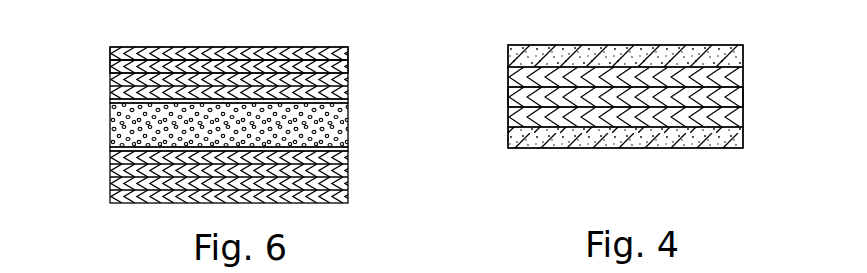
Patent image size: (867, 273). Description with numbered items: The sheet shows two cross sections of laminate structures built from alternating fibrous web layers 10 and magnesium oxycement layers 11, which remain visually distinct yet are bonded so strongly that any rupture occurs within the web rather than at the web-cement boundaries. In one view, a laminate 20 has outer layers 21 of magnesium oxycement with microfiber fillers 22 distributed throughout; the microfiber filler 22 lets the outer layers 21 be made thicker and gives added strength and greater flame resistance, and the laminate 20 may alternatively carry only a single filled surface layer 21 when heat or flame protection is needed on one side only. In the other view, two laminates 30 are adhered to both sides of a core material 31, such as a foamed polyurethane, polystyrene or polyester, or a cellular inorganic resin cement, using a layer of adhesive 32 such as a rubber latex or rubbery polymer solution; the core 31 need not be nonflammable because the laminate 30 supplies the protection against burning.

In FIG. 6, the fibrous web layer 10 is at (128, 52).
In FIG. 4, the fibrous web layer 10 is at (512, 77).
In FIG. 6, the magnesium oxycement layer 11 is at (110, 65).
In FIG. 4, the magnesium oxycement layer 11 is at (510, 88).
In FIG. 4, the laminate 20 is at (752, 45).
In FIG. 4, the outer layer 21 is at (508, 53).
In FIG. 4, the microfiber filler 22 is at (543, 54).
In FIG. 6, the laminate 30 is at (360, 43).
In FIG. 6, the core material 31 is at (112, 121).
In FIG. 6, the adhesive 32 is at (112, 100).